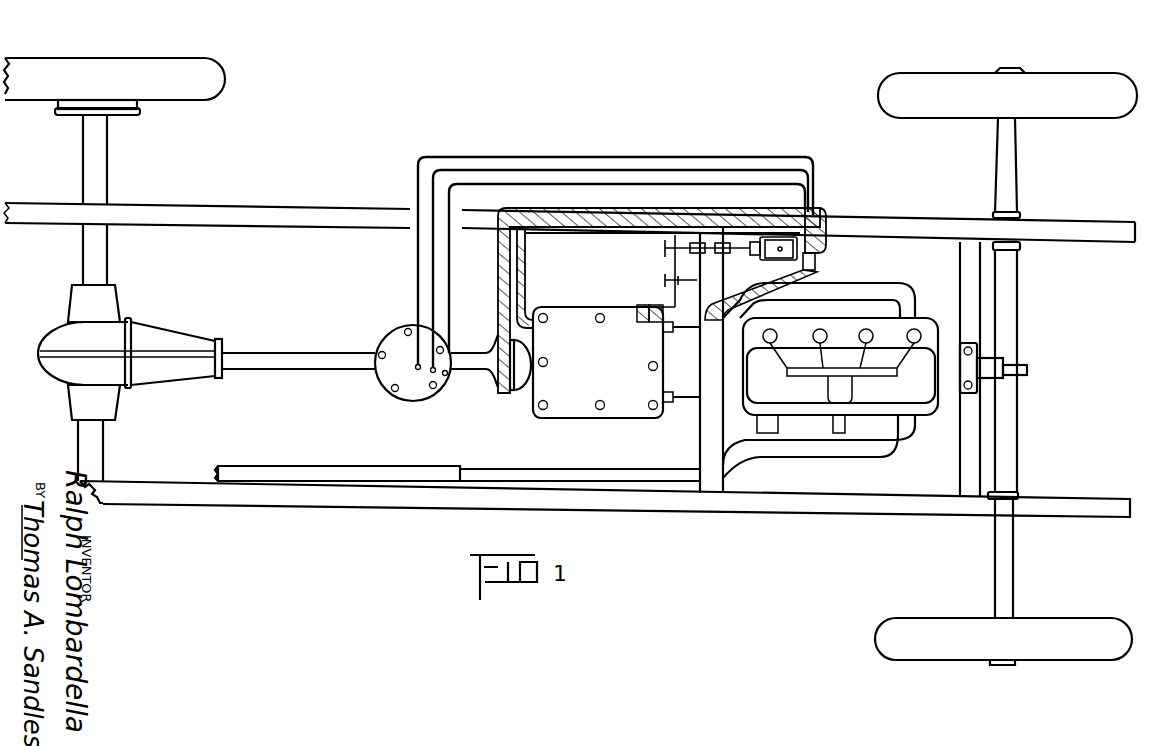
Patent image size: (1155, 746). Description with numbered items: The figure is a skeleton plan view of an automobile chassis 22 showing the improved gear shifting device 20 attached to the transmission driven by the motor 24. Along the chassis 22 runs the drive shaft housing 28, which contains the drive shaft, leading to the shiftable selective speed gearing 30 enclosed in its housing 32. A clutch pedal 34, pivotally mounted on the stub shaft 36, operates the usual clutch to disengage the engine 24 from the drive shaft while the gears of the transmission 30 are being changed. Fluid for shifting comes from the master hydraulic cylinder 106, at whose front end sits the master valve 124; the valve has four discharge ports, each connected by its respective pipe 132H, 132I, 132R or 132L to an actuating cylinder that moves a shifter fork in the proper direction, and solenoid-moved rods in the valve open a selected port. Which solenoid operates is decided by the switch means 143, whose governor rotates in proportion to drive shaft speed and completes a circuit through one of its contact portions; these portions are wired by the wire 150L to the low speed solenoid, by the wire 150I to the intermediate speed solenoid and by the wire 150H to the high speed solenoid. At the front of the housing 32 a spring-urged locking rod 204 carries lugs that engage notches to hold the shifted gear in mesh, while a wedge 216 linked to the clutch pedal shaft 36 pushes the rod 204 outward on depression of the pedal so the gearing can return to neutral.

The gear shifting device 20 is at (814, 232).
The chassis 22 is at (920, 224).
The motor 24 is at (880, 385).
The drive shaft housing 28 is at (343, 364).
The shiftable selective speed gearing 30 is at (603, 362).
The transmission housing 32 is at (602, 420).
The clutch pedal 34 is at (664, 250).
The stub shaft 36 is at (673, 266).
The master hydraulic cylinder 106 is at (800, 252).
The master valve 124 is at (816, 262).
The pipe 132H is at (518, 259).
The pipe 132I is at (708, 360).
The pipe 132L is at (504, 281).
The pipe 132R is at (684, 400).
The switch means 143 is at (418, 390).
The wire 150H is at (744, 184).
The wire 150I is at (653, 170).
The wire 150L is at (556, 157).
The rod 204 is at (660, 305).
The wedge 216 is at (640, 310).